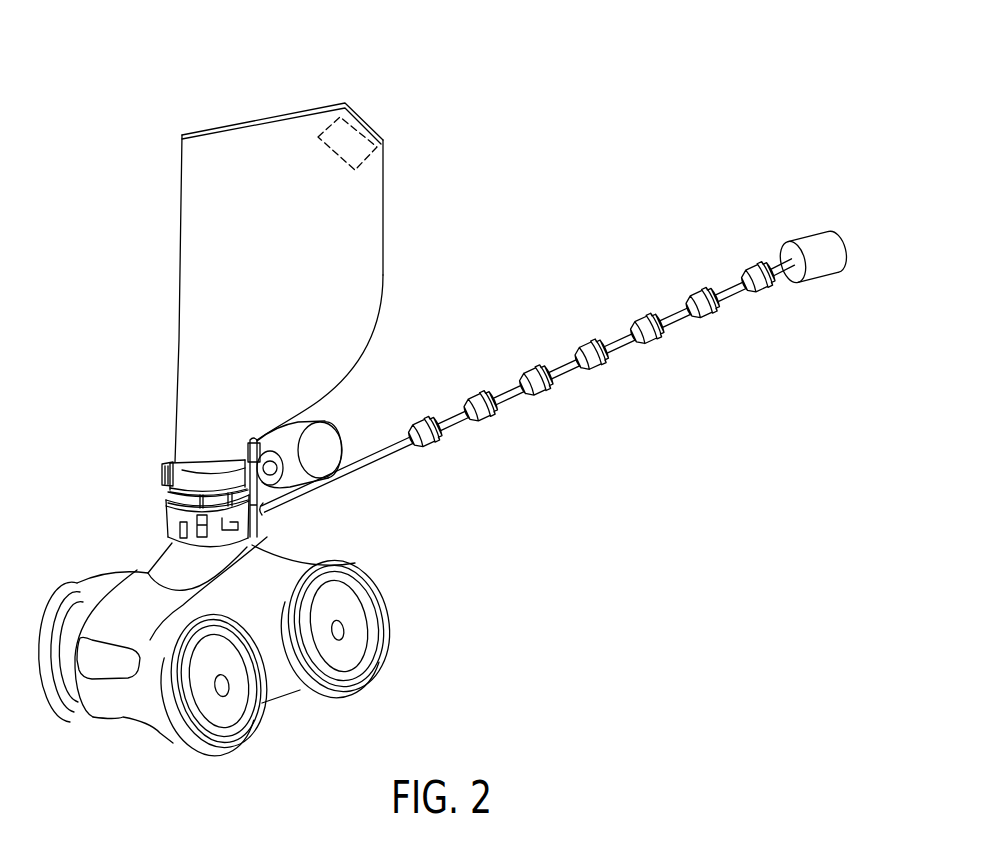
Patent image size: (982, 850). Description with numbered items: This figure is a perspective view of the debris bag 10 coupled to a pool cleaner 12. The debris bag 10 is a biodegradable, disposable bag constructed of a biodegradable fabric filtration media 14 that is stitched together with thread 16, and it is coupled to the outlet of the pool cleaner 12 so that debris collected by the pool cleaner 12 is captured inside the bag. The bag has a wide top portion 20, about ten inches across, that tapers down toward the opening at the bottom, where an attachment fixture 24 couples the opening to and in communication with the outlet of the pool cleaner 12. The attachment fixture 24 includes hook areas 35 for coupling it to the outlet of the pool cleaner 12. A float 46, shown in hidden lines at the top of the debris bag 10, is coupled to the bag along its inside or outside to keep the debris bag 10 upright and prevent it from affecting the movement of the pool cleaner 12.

The debris bag 10 is at (267, 80).
The pool cleaner 12 is at (104, 545).
The biodegradable fabric filtration media 14 is at (213, 242).
The thread 16 is at (383, 220).
The top portion 20 is at (246, 156).
The attachment fixture 24 is at (145, 488).
The hook areas 35 is at (241, 535).
The float 46 is at (363, 127).